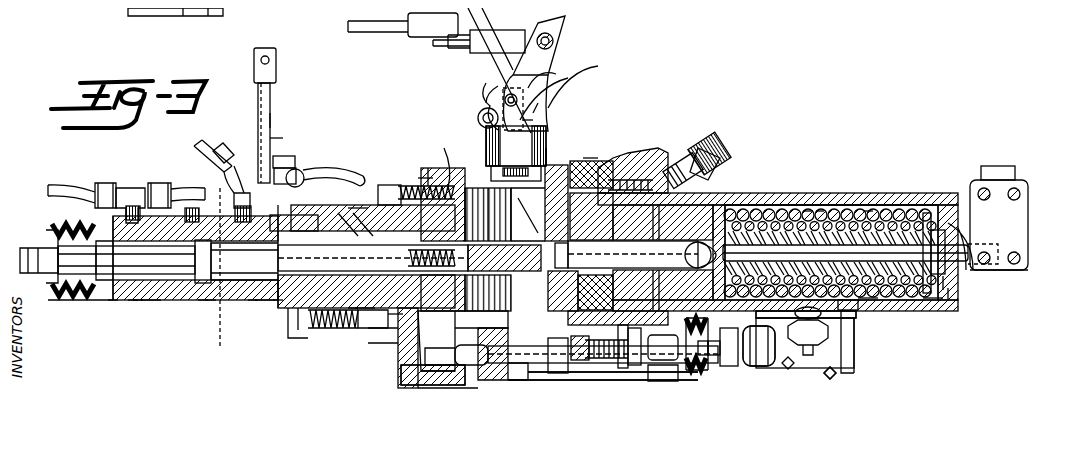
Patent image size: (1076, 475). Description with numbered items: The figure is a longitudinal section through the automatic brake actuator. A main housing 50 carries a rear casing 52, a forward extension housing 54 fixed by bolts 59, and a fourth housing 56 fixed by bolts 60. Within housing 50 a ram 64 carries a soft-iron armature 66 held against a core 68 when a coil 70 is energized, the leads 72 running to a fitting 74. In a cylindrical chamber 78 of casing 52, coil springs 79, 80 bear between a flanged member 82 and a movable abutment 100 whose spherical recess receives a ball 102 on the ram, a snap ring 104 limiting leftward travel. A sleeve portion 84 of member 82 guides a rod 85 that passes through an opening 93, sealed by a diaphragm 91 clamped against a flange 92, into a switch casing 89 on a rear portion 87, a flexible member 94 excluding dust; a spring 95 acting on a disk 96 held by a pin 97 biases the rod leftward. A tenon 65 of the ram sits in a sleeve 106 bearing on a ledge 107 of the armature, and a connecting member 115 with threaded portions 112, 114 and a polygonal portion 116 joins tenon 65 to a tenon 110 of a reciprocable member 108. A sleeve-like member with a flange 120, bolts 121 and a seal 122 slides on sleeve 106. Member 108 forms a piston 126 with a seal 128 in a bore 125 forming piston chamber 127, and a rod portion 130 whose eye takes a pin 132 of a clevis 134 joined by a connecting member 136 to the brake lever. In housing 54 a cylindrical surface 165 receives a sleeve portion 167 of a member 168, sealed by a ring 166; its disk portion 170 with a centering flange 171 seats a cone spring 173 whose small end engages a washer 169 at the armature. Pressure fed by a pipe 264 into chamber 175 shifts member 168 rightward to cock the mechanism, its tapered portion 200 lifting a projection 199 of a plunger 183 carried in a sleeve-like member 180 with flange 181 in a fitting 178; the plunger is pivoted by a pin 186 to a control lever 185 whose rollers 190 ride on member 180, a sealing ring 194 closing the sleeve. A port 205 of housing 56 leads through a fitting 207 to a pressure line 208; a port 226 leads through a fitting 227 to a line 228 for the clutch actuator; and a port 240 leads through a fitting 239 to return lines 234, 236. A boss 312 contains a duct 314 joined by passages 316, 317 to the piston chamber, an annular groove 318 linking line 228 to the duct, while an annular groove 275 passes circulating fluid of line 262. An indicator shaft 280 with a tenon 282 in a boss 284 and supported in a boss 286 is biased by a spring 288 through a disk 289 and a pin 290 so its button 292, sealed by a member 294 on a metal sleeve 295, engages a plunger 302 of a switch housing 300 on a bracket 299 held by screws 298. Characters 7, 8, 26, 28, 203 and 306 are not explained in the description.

The dimension 7 is at (222, 189).
The spring 8 is at (388, 300).
The fitting 26 is at (196, 5).
The fitting 28 is at (132, 4).
The main housing 50 is at (562, 362).
The second housing 52 is at (870, 195).
The third housing 54 is at (345, 300).
The fourth housing 56 is at (125, 294).
The bolts 59 is at (410, 178).
The bolts 60 is at (352, 300).
The ram 64 is at (628, 160).
The tenon portion 65 is at (552, 234).
The armature 66 is at (560, 345).
The core member 68 is at (625, 358).
The coil 70 is at (582, 150).
The leads 72 is at (662, 150).
The stationary connector 74 is at (695, 140).
The cylindrical chamber 78 is at (800, 203).
The coil spring 79 is at (812, 203).
The coil spring 80 is at (860, 203).
The abutment member 82 is at (920, 298).
The sleeve portion 84 is at (860, 285).
The rod 85 is at (912, 205).
The rearwardly extending portion 87 is at (985, 262).
The switch casing 89 is at (1018, 222).
The flexible diaphragm 91 is at (950, 220).
The inwardly extending flange 92 is at (940, 288).
The opening 93 is at (935, 275).
The flexible member 94 is at (958, 215).
The coil spring 95 is at (780, 203).
The disk 96 is at (765, 203).
The pin 97 is at (752, 203).
The movable abutment 100 is at (692, 258).
The ball-shaped element 102 is at (690, 235).
The snap ring 104 is at (652, 215).
The sleeve 106 is at (480, 335).
The ledge 107 is at (485, 325).
The reciprocable member 108 is at (148, 294).
The tenon portion 110 is at (236, 261).
The threaded portion 112 is at (357, 255).
The threaded portion 114 is at (432, 150).
The connecting member 115 is at (395, 302).
The polygonally shaped portion 116 is at (418, 170).
The flange portion 120 is at (328, 300).
The bolts 121 is at (336, 300).
The fluid-tight seal 122 is at (425, 160).
The cylindrical bore 125 is at (130, 296).
The piston 126 is at (187, 252).
The piston chamber 127 is at (138, 294).
The fluid-tight seal 128 is at (203, 294).
The rod portion 130 is at (105, 292).
The pin 132 is at (45, 220).
The clevis member 134 is at (42, 236).
The connecting member 136 is at (62, 290).
The cylindrical interior surface 165 is at (380, 185).
The sealing ring 166 is at (405, 305).
The sleeve portion 167 is at (440, 140).
The member 168 is at (498, 215).
The washer 169 is at (565, 262).
The disklike portion 170 is at (478, 360).
The peripheral flange 171 is at (510, 184).
The cone-shaped coil spring 173 is at (515, 205).
The chamber 175 is at (350, 203).
The fitting 178 is at (538, 147).
The sleeve-like member 180 is at (560, 118).
The flange 181 is at (520, 112).
The plunger 183 is at (530, 95).
The control lever 185 is at (548, 66).
The pivot pin 186 is at (490, 78).
The rollers 190 is at (470, 115).
The sealing ring 194 is at (478, 142).
The projection 199 is at (540, 140).
The tapered portion 200 is at (478, 154).
The cylinder 203 is at (445, 40).
The port 205 is at (272, 150).
The fitting 207 is at (278, 160).
The fluid line 208 is at (262, 110).
The port 226 is at (268, 135).
The fitting 227 is at (240, 165).
The fluid line 228 is at (190, 138).
The pipe 234 is at (182, 178).
The fluid-return line 236 is at (82, 180).
The fitting 239 is at (125, 178).
The port 240 is at (100, 228).
The fluid line 262 is at (355, 165).
The fluid pressure line 264 is at (340, 211).
The annular groove 275 is at (245, 294).
The indicator shaft 280 is at (500, 360).
The enlarged tenon 282 is at (400, 310).
The boss 284 is at (420, 377).
The boss 286 is at (555, 355).
The coil spring 288 is at (568, 356).
The disk 289 is at (640, 360).
The pin 290 is at (630, 358).
The button 292 is at (720, 360).
The sealing member 294 is at (695, 370).
The metal sleeve 295 is at (698, 300).
The screws 298 is at (750, 306).
The bracket member 299 is at (828, 348).
The switch housing 300 is at (808, 372).
The plunger 302 is at (742, 355).
The bar 306 is at (440, 380).
The boss portion 312 is at (270, 300).
The duct 314 is at (262, 298).
The passage 316 is at (195, 294).
The passage 317 is at (362, 302).
The annular groove 318 is at (252, 296).